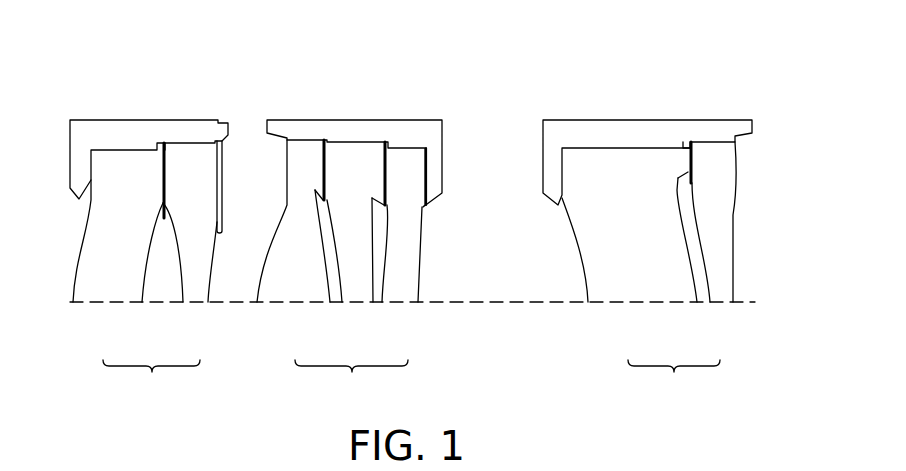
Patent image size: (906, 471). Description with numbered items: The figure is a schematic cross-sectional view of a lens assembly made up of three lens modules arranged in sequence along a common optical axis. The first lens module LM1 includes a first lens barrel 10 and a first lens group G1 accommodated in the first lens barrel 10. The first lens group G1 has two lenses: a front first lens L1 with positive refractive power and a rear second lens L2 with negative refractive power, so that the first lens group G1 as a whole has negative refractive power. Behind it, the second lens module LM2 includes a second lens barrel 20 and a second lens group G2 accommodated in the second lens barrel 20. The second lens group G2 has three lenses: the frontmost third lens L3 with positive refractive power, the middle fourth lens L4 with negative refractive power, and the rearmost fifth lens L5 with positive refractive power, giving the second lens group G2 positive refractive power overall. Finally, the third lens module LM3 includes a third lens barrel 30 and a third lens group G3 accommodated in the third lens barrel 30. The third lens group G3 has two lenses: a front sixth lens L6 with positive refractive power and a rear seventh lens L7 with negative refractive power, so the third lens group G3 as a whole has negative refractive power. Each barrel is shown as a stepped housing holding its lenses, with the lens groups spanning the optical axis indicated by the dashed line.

The first lens barrel 10 is at (177, 120).
The second lens barrel 20 is at (402, 120).
The third lens barrel 30 is at (665, 120).
The first lens module LM1 is at (106, 77).
The second lens module LM2 is at (332, 77).
The third lens module LM3 is at (596, 77).
The first lens L1 is at (102, 300).
The second lens L2 is at (197, 300).
The third lens L3 is at (293, 300).
The fourth lens L4 is at (352, 300).
The fifth lens L5 is at (402, 300).
The sixth lens L6 is at (623, 300).
The seventh lens L7 is at (717, 300).
The first lens group G1 is at (151, 379).
The second lens group G2 is at (351, 379).
The third lens group G3 is at (674, 379).